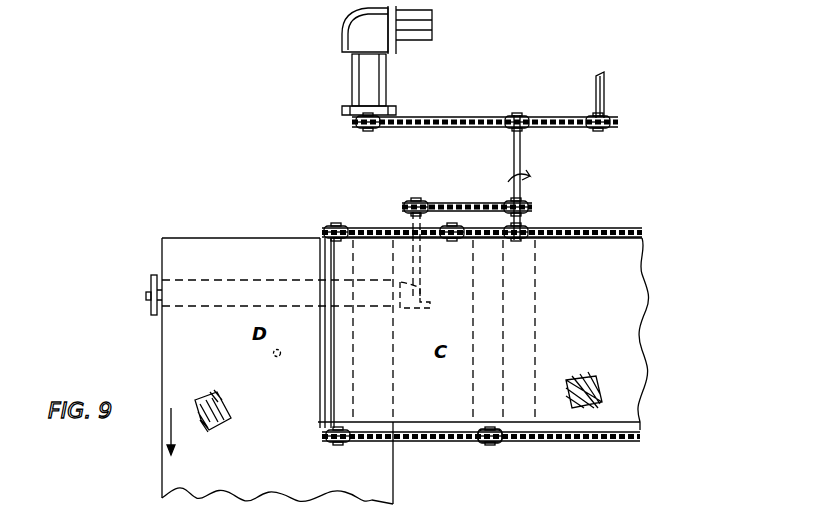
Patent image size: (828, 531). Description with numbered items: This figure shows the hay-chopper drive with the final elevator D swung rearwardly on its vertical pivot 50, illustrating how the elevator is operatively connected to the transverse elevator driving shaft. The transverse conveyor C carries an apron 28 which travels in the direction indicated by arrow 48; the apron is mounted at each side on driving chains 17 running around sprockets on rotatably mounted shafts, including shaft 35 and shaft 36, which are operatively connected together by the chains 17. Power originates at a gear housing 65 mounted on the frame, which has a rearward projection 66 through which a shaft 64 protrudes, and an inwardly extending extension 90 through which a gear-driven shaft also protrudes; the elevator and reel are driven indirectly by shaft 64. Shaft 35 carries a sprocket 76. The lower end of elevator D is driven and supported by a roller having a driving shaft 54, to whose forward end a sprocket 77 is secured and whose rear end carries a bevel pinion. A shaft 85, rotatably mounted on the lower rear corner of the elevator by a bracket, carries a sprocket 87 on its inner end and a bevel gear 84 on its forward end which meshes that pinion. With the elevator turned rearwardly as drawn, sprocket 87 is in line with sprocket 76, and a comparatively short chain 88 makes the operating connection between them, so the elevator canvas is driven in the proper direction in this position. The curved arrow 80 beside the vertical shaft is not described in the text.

The driving chains 17 is at (588, 226).
The apron 28 is at (584, 374).
The shaft 35 is at (490, 444).
The shaft 36 is at (525, 186).
The arrow 48 is at (548, 260).
The vertical pivot 50 is at (276, 354).
The driving shaft 54 is at (150, 296).
The shaft 64 is at (376, 132).
The gear housing 65 is at (352, 36).
The rearward projection 66 is at (388, 78).
The sprocket 76 is at (504, 200).
The sprocket 77 is at (154, 310).
The rotation arrow 80 is at (514, 166).
The bevel gear 84 is at (296, 0).
The shaft 85 is at (408, 222).
The sprocket 87 is at (410, 204).
The chain 88 is at (456, 204).
The extension 90 is at (428, 42).